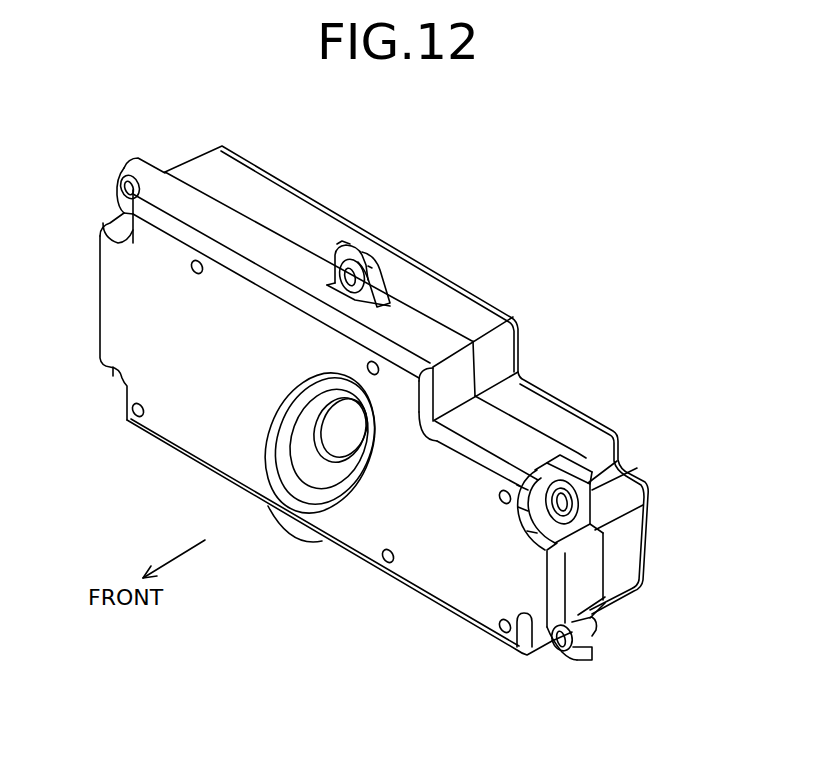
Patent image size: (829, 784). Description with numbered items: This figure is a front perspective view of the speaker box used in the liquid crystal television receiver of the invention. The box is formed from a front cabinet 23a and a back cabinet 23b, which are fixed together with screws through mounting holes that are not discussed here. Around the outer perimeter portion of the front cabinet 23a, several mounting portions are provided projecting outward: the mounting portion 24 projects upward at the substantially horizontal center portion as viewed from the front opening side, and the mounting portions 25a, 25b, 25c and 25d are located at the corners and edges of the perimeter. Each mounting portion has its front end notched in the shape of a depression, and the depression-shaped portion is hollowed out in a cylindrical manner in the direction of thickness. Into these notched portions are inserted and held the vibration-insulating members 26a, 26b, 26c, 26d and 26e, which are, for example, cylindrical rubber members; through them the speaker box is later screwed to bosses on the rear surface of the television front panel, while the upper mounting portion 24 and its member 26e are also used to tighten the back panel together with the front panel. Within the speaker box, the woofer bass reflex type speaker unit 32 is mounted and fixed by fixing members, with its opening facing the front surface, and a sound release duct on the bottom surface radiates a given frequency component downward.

The front cabinet 23a is at (437, 590).
The back cabinet 23b is at (470, 302).
The mounting portion 24 is at (387, 275).
The mounting portion 25a is at (610, 478).
The mounting portion 25b is at (587, 658).
The mounting portion 25c is at (118, 379).
The mounting portion 25d is at (130, 162).
The vibration-insulating member 26a is at (583, 523).
The vibration-insulating member 26b is at (563, 657).
The vibration-insulating member 26c is at (122, 392).
The vibration-insulating member 26d is at (118, 193).
The vibration-insulating member 26e is at (362, 250).
The speaker unit 32 is at (310, 470).